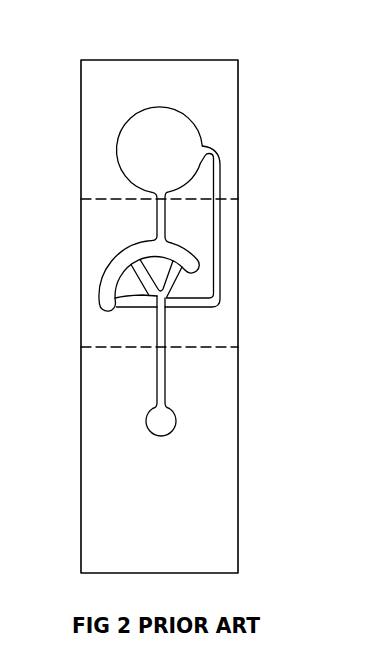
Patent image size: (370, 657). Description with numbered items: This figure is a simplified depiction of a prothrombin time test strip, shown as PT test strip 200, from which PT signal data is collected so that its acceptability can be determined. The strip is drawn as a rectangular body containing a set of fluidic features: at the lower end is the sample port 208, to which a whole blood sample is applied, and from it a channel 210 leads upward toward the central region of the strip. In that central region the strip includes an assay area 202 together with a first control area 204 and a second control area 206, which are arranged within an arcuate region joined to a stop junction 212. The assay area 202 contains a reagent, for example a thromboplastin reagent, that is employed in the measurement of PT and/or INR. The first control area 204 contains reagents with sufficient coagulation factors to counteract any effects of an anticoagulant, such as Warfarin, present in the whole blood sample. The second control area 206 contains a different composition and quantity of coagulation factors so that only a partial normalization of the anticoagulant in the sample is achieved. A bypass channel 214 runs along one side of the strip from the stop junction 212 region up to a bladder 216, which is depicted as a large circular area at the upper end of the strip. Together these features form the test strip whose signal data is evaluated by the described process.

The PT test strip 200 is at (265, 68).
The assay area 202 is at (130, 310).
The first control area 204 is at (138, 273).
The second control area 206 is at (186, 272).
The sample port 208 is at (175, 418).
The channel 210 is at (165, 375).
The stop junction 212 is at (188, 249).
The bypass channel 214 is at (221, 188).
The bladder 216 is at (198, 130).